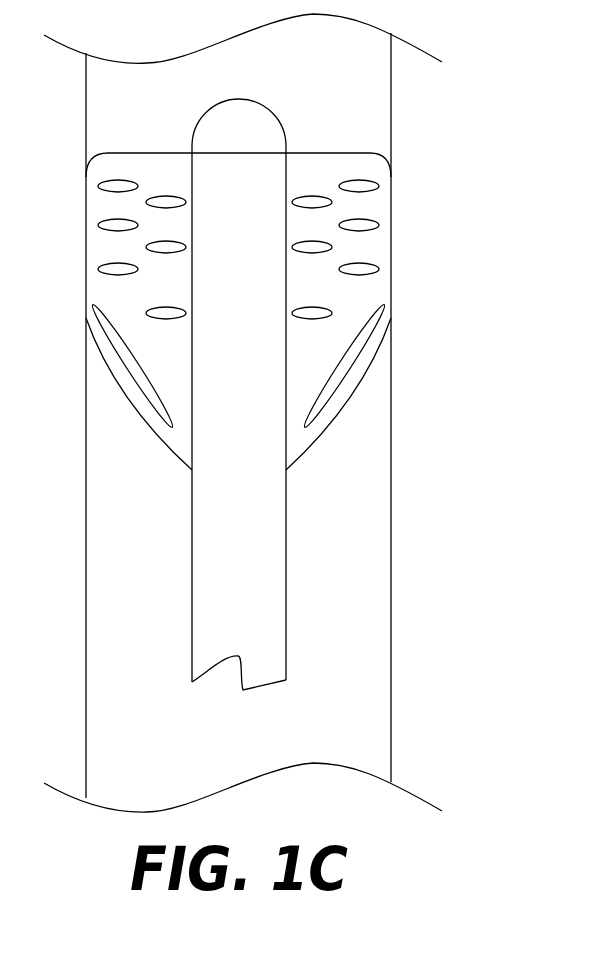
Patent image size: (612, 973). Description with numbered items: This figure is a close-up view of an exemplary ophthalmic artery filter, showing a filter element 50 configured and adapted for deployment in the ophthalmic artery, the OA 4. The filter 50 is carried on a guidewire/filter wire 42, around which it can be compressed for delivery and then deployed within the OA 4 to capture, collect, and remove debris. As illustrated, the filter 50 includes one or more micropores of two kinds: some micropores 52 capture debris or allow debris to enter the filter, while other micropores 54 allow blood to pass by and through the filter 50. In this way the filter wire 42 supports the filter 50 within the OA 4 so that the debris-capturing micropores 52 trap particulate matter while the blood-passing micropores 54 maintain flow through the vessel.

The OA 4 is at (391, 618).
The guidewire/filter wire 42 is at (263, 560).
The filter element 50 is at (360, 296).
The micropores 52 is at (360, 225).
The micropores 54 is at (348, 364).